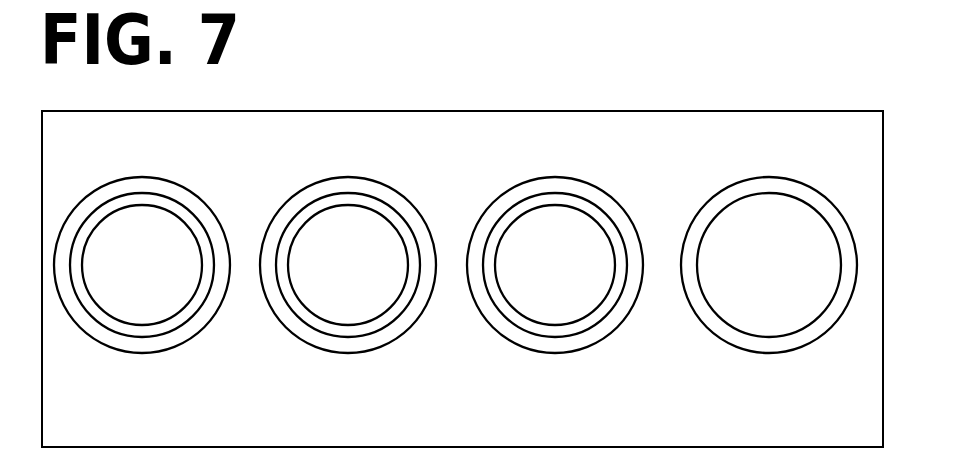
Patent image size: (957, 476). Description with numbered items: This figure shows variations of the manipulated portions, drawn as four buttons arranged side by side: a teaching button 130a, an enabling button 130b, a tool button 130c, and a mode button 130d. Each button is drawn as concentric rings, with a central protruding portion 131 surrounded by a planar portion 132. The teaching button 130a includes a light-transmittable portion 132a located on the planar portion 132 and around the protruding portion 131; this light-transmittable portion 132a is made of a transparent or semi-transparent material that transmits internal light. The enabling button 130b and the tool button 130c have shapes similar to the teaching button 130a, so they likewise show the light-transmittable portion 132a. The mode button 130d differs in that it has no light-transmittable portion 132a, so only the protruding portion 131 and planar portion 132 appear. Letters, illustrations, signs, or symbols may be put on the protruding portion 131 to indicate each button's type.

The teaching button 130a is at (142, 357).
The enabling button 130b is at (345, 355).
The tool button 130c is at (553, 355).
The mode button 130d is at (768, 355).
The protruding portion 131 is at (142, 215).
The planar portion 132 is at (193, 203).
The light-transmittable portion 132a is at (162, 205).